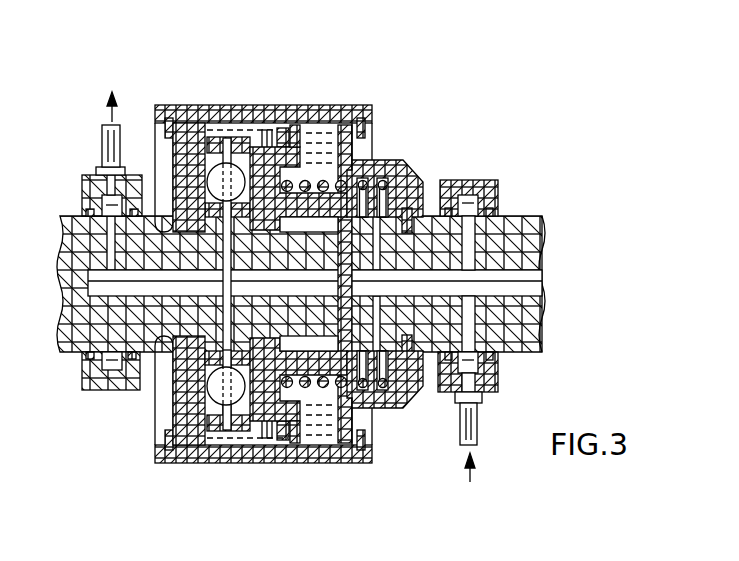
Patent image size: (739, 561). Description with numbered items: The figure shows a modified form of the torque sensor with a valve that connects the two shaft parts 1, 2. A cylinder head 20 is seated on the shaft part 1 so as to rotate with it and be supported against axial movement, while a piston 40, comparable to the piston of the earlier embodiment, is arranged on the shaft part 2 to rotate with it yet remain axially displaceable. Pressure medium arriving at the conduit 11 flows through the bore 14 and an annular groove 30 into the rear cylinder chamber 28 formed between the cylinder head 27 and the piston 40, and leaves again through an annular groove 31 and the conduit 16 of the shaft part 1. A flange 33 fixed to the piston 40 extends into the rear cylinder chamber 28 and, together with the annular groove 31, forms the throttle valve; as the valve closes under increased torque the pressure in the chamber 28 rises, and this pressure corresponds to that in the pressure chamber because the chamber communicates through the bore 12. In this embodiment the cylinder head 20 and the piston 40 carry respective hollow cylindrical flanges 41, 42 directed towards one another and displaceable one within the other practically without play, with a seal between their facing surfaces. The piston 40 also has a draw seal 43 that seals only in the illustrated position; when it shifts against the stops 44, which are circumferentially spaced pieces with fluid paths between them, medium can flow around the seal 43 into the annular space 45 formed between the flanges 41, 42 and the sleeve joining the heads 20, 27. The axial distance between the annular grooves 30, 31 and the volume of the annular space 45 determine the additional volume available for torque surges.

The shaft part 1 is at (72, 347).
The shaft part 2 is at (530, 232).
The conduit 11 is at (473, 432).
The bore 12 is at (503, 280).
The bore 14 is at (432, 292).
The conduit 16 is at (103, 137).
The cylinder head 20 is at (173, 147).
The cylinder head 27 is at (408, 388).
The rear cylinder chamber 28 is at (317, 430).
The annular groove 30 is at (392, 208).
The annular groove 31 is at (352, 207).
The flange 33 is at (310, 207).
The piston 40 is at (263, 393).
The hollow cylindrical flange 41 is at (212, 135).
The hollow cylindrical flange 42 is at (243, 147).
The draw seal 43 is at (283, 142).
The stops 44 is at (265, 138).
The annular space 45 is at (217, 440).